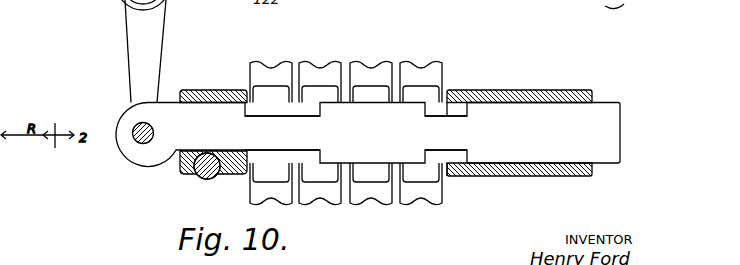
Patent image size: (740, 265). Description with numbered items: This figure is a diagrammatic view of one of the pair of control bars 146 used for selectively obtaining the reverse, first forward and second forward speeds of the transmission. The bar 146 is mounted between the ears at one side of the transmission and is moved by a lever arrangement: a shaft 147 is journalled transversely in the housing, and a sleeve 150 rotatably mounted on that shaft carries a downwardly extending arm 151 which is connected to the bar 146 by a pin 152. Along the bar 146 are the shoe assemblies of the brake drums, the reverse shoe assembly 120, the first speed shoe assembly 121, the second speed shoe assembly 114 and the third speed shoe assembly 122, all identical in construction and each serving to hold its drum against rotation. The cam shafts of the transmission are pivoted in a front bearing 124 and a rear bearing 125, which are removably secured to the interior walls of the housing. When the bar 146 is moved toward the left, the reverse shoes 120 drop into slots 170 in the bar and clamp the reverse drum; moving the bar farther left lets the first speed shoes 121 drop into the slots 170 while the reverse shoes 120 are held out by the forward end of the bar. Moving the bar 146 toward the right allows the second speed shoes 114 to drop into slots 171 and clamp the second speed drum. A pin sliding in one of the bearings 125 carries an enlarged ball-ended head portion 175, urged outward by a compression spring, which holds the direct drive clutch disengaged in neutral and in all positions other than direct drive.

The shoe assembly 114 is at (328, 65).
The shoe assembly 120 is at (427, 63).
The shoe assembly 121 is at (365, 65).
The shoe assembly 122 is at (262, 70).
The front bearing 124 is at (537, 90).
The rear bearing 125 is at (210, 90).
The bar 146 is at (368, 135).
The shaft 147 is at (112, 0).
The sleeve 150 is at (113, 7).
The arm 151 is at (142, 49).
The pin 152 is at (135, 140).
The slot 170 is at (426, 110).
The slot 171 is at (267, 112).
The head portion 175 is at (200, 174).